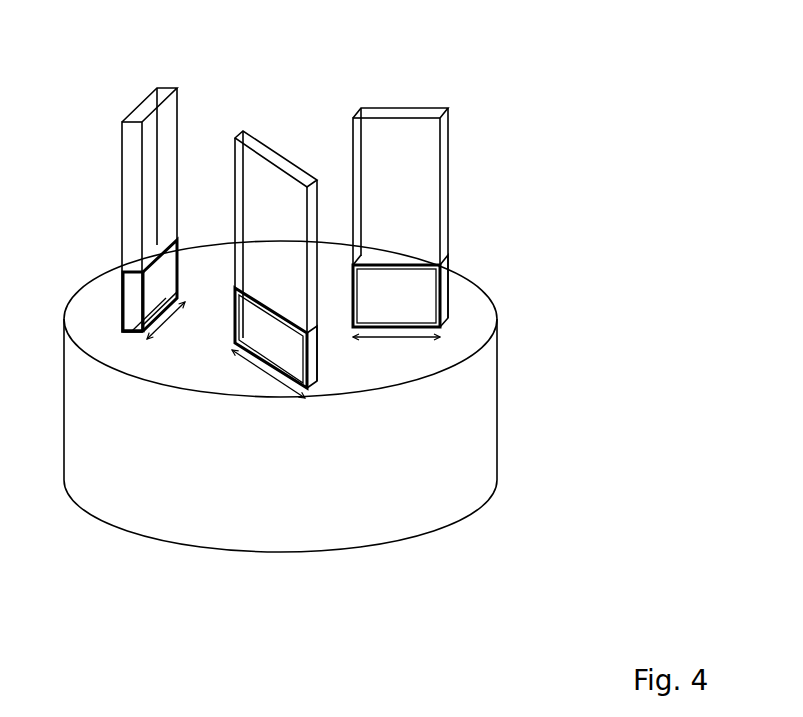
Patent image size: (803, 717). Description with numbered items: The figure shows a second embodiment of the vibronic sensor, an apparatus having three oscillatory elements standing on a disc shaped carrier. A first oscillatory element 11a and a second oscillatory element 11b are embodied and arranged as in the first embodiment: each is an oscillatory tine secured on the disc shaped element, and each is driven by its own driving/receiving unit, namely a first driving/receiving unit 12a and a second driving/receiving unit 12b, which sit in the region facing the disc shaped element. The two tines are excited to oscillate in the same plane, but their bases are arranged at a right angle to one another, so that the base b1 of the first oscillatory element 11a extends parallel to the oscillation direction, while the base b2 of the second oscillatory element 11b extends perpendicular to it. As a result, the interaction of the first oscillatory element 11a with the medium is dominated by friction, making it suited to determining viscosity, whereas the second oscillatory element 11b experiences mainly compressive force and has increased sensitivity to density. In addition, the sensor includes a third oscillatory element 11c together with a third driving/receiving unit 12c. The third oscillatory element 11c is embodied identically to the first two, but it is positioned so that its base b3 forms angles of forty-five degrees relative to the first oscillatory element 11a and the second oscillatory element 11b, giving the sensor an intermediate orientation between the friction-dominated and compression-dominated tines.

The first oscillatory element 11a is at (120, 111).
The second oscillatory element 11b is at (400, 98).
The third oscillatory element 11c is at (278, 187).
The first driving/receiving unit 12a is at (150, 293).
The second driving/receiving unit 12b is at (418, 290).
The third driving/receiving unit 12c is at (284, 353).
The base of the first oscillatory element b1 is at (167, 321).
The base of the second oscillatory element b2 is at (396, 349).
The base of the third oscillatory element b3 is at (268, 374).